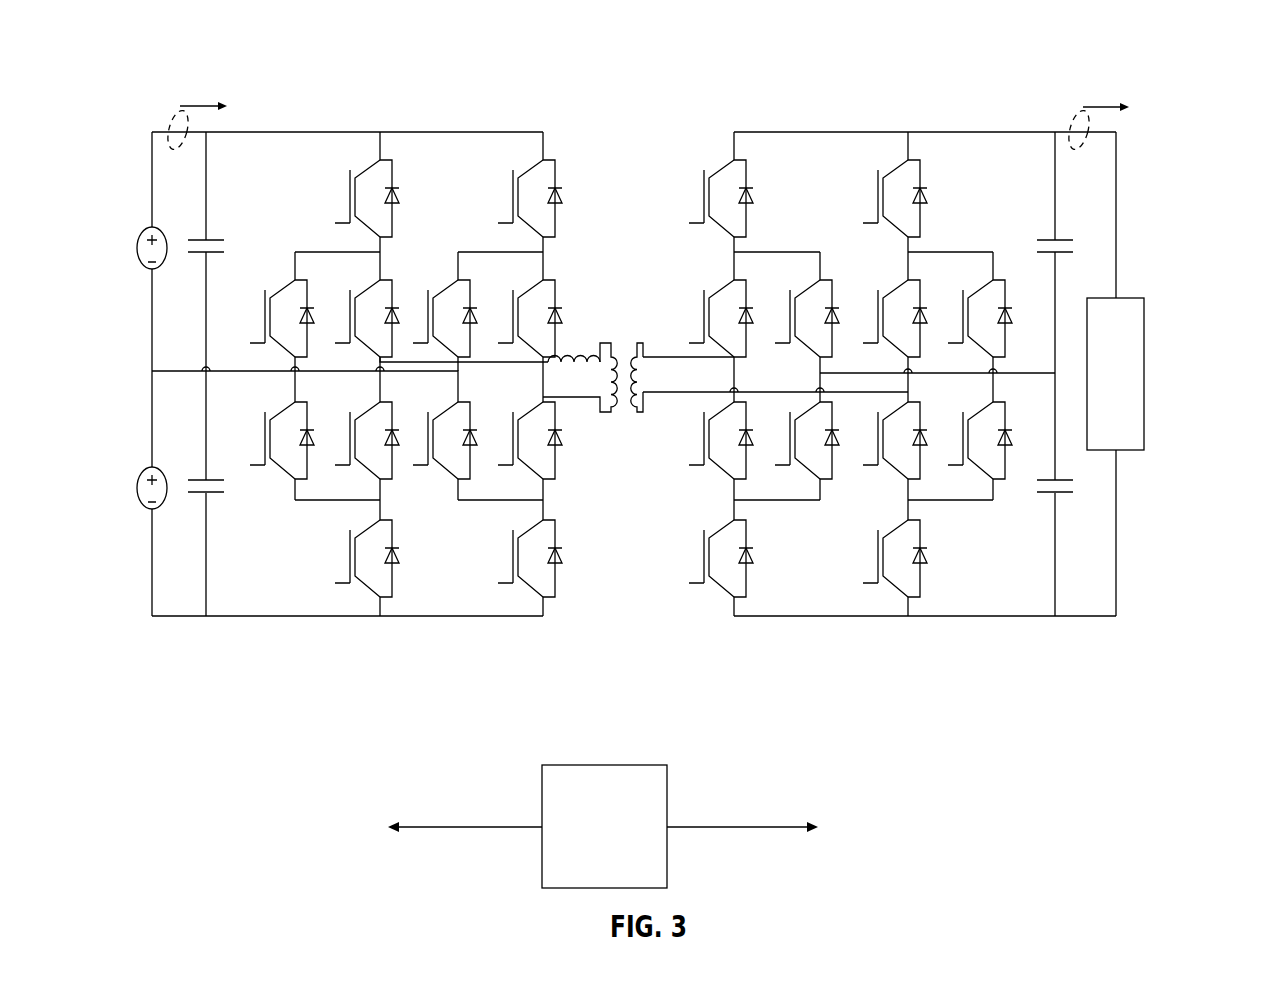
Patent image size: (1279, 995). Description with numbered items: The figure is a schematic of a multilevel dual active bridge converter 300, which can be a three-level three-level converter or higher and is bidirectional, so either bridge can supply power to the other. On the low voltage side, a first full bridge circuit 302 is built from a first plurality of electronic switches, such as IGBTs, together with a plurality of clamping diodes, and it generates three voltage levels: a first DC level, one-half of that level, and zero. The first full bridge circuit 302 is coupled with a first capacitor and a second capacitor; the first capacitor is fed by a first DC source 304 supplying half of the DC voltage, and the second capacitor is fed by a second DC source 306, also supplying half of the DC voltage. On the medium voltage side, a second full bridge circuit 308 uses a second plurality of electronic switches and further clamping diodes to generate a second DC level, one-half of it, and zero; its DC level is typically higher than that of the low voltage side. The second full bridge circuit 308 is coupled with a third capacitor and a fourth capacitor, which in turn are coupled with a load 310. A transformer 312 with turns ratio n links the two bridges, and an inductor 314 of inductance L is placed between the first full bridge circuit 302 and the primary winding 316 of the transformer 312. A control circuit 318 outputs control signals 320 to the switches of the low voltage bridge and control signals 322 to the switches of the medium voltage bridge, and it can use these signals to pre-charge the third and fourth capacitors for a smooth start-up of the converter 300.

The multilevel dual active bridge converter 300 is at (670, 479).
The first full bridge circuit 302 is at (558, 635).
The first DC source 304 is at (145, 230).
The second DC source 306 is at (145, 470).
The second full bridge circuit 308 is at (1020, 635).
The load 310 is at (1144, 342).
The transformer 312 is at (621, 389).
The inductor 314 is at (585, 357).
The primary winding 316 is at (612, 416).
The control circuit 318 is at (605, 765).
The control signals 320 is at (458, 829).
The control signals 322 is at (745, 829).